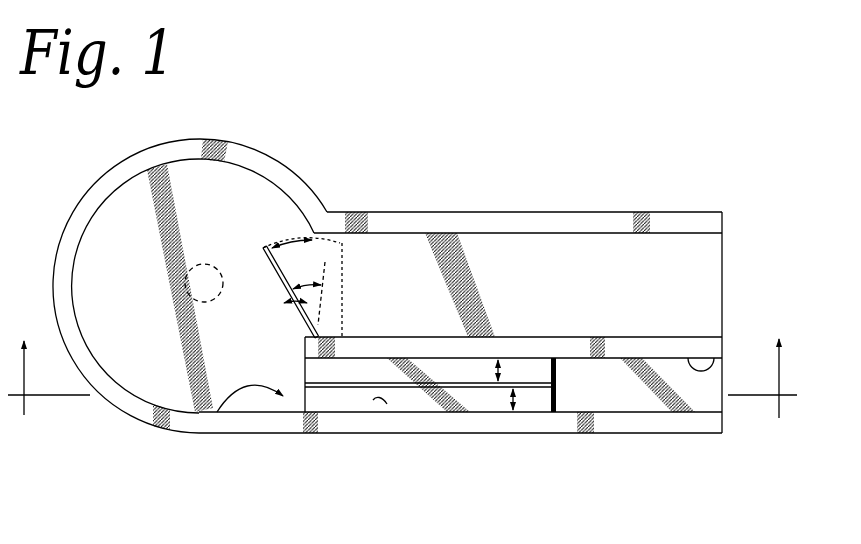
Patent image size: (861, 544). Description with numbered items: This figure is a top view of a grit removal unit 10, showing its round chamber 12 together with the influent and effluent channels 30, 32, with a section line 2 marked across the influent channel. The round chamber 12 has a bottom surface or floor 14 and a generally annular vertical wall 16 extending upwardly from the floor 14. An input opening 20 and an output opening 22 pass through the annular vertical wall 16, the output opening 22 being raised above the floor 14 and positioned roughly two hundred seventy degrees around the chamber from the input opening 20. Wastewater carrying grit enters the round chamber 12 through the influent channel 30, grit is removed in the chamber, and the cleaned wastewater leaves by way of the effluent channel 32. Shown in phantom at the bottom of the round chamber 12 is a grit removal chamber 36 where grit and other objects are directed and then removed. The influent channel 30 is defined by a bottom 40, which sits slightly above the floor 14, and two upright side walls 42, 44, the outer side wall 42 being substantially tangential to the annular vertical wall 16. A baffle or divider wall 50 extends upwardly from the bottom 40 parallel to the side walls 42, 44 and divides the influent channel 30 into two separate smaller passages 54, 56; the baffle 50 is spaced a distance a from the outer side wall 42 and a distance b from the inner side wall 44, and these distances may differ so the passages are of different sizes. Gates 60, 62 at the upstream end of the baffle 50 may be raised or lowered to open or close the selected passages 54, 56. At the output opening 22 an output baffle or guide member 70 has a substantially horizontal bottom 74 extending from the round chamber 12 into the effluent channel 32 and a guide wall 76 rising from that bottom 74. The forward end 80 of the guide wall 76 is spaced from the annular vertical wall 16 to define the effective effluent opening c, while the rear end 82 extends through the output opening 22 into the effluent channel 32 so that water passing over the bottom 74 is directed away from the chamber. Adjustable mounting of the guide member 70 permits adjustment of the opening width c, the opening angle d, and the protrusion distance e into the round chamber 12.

The section line 2- 2 is at (402, 365).
The grit removal unit 10 is at (453, 168).
The round chamber 12 is at (243, 140).
The bottom surface or floor 14 is at (115, 338).
The annular vertical wall 16 is at (78, 265).
The input opening 20 is at (313, 332).
The output opening 22 is at (313, 277).
The influent channel 30 is at (483, 414).
The effluent channel 32 is at (527, 248).
The grit removal chamber 36 is at (197, 262).
The bottom of influent channel 40 is at (589, 401).
The outer influent channel side wall 42 is at (373, 400).
The inner influent channel side wall 44 is at (722, 358).
The baffle or divider wall 50 is at (368, 383).
The separate smaller passage 54 is at (420, 402).
The separate smaller passage 56 is at (453, 371).
The gate 60 is at (558, 411).
The gate 62 is at (557, 361).
The output baffle or guide member 70 is at (283, 232).
The guide member bottom 74 is at (340, 261).
The guide wall 76 is at (283, 300).
The forward end of guide wall 80 is at (263, 249).
The rear end of guide wall 82 is at (311, 339).
The distance a is at (518, 397).
The distance b is at (502, 370).
The output flow opening width or effective effluent opening c is at (287, 249).
The opening angle d is at (346, 333).
The protrusion distance e is at (284, 282).